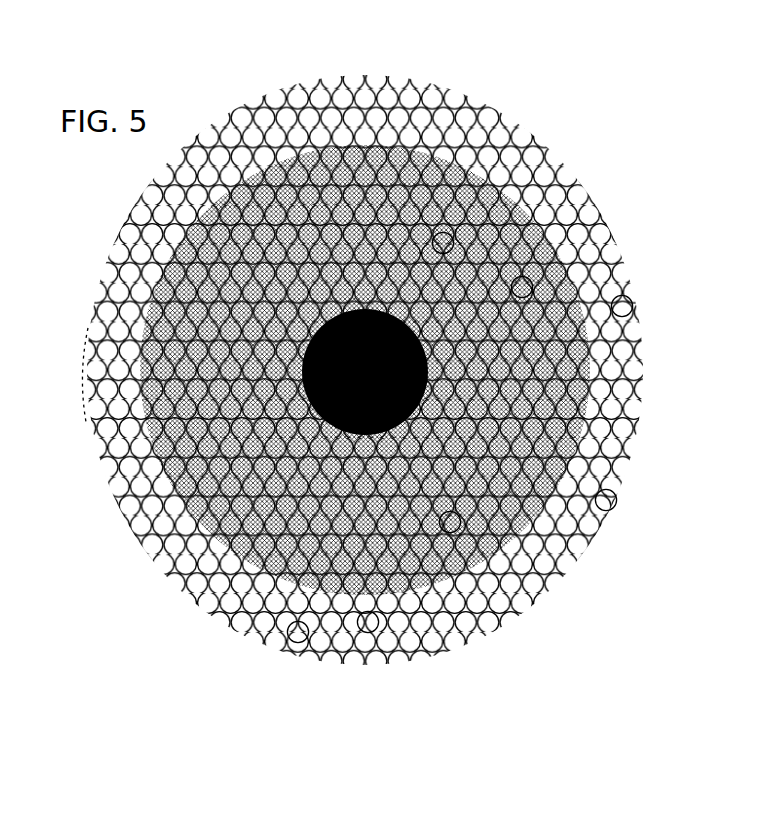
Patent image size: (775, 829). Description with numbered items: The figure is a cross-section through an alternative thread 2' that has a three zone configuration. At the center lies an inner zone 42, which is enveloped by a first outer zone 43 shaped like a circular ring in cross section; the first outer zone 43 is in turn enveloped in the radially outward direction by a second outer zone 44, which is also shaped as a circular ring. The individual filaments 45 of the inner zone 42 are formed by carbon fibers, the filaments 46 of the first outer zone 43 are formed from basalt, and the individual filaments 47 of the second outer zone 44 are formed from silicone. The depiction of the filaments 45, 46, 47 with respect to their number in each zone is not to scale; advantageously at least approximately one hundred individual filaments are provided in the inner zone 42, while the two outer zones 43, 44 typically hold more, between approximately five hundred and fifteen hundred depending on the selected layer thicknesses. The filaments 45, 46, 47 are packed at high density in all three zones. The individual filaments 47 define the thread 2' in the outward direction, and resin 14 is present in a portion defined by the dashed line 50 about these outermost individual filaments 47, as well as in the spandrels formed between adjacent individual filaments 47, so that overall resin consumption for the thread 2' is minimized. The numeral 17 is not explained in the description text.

The alternative thread 2' is at (357, 412).
The resin 14 is at (611, 525).
The outer layer wire 17 is at (630, 300).
The inner zone 42 is at (327, 437).
The first outer zone 43 is at (468, 545).
The second outer zone 44 is at (372, 645).
The individual filaments of the inner zone 45 is at (450, 238).
The filaments of the first outer zone 46 is at (527, 280).
The individual filaments of the second outer zone 47 is at (293, 640).
The dashed line 50 is at (90, 427).